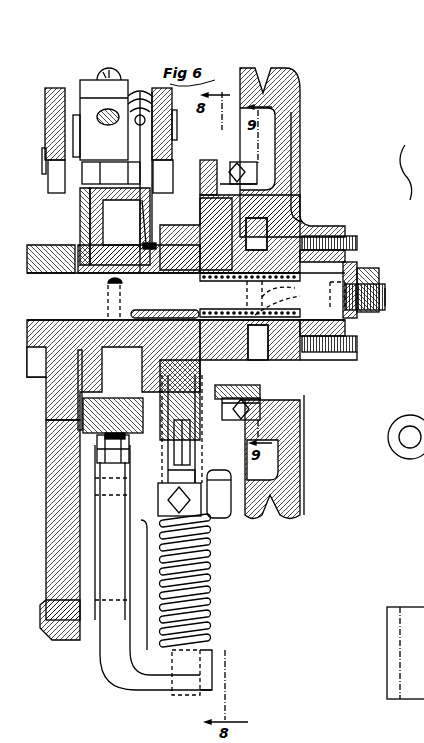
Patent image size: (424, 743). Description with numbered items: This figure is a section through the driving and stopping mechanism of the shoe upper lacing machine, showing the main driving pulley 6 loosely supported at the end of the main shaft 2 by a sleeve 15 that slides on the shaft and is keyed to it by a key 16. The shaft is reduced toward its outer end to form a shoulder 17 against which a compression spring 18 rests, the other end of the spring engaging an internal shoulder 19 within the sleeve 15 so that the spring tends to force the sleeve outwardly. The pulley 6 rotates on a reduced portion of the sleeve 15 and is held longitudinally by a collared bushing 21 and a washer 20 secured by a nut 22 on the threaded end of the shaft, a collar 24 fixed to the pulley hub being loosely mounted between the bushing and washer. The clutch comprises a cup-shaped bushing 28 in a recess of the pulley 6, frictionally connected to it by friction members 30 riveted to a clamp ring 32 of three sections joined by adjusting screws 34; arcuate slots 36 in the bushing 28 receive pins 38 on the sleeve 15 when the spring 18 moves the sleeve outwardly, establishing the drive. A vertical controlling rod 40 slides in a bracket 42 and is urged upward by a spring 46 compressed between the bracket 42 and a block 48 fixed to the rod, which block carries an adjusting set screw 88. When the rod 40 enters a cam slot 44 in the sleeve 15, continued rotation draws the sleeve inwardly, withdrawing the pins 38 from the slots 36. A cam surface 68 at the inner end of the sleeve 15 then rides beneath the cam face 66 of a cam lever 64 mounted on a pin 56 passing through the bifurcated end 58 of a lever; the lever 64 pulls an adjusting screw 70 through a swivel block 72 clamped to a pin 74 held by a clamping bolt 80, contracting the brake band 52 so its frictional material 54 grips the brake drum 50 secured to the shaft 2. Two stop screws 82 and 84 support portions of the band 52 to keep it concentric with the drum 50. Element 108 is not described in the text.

The main shaft 2 is at (50, 310).
The main driving pulley 6 is at (298, 96).
The sleeve 15 is at (190, 226).
The key 16 is at (170, 312).
The shoulder 17 is at (203, 297).
The compression spring 18 is at (300, 307).
The internal shoulder 19 is at (277, 305).
The washer 20 is at (366, 318).
The collared bushing 21 is at (358, 268).
The nut 22 is at (380, 276).
The collar 24 is at (357, 236).
The cup-shaped bushing 28 is at (275, 212).
The friction members 30 is at (262, 392).
The clamp ring 32 is at (250, 182).
The adjusting screws 34 is at (252, 170).
The arcuate slots 36 is at (270, 240).
The pins 38 is at (278, 287).
The controlling rod 40 is at (180, 698).
The bracket 42 is at (215, 666).
The cam slot 44 is at (136, 290).
The spring 46 is at (212, 577).
The block 48 is at (215, 508).
The brake drum 50 is at (88, 222).
The brake band 52 is at (100, 440).
The frictional material 54 is at (82, 418).
The pin 56 is at (44, 170).
The bifurcated end 58 is at (172, 118).
The cam lever 64 is at (140, 158).
The cam face 66 is at (150, 244).
The cam surface 68 is at (146, 250).
The adjusting screw 70 is at (104, 76).
The swivel block 72 is at (82, 84).
The pin 74 is at (74, 166).
The clamping bolt 80 is at (143, 90).
The stop screw 82 is at (132, 446).
The stop screw 84 is at (97, 462).
The adjusting set screw 88 is at (190, 443).
The spacer 108 is at (204, 164).